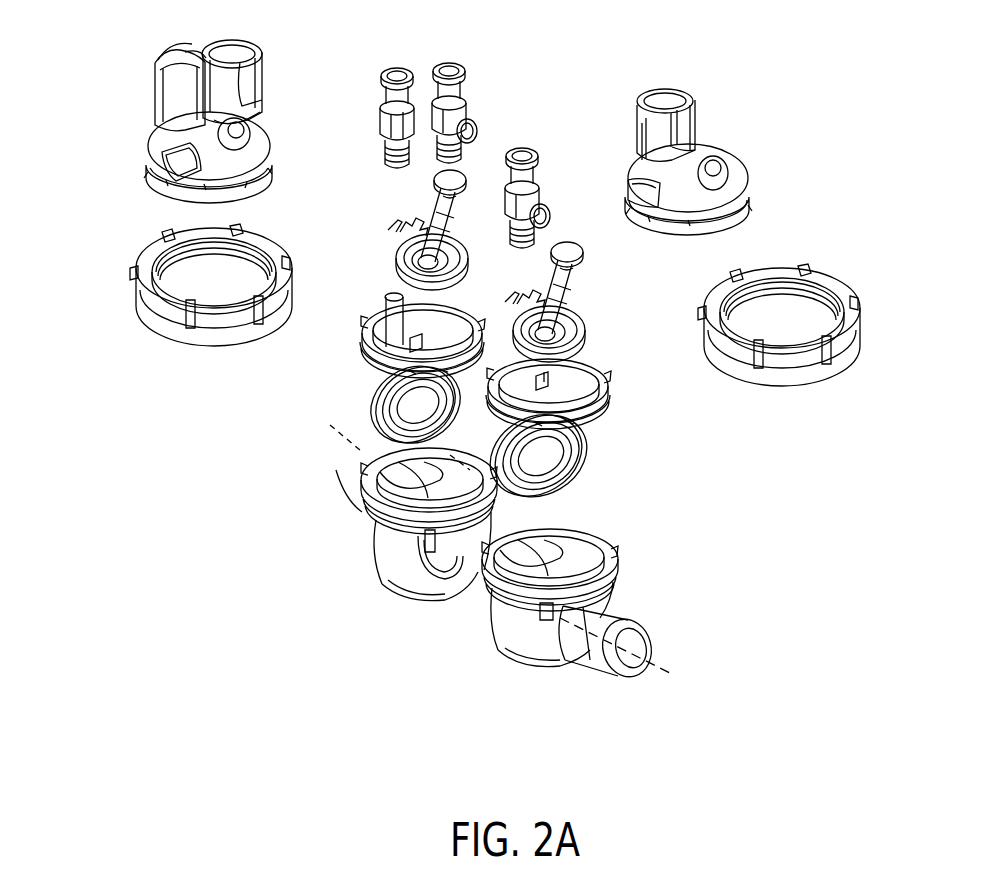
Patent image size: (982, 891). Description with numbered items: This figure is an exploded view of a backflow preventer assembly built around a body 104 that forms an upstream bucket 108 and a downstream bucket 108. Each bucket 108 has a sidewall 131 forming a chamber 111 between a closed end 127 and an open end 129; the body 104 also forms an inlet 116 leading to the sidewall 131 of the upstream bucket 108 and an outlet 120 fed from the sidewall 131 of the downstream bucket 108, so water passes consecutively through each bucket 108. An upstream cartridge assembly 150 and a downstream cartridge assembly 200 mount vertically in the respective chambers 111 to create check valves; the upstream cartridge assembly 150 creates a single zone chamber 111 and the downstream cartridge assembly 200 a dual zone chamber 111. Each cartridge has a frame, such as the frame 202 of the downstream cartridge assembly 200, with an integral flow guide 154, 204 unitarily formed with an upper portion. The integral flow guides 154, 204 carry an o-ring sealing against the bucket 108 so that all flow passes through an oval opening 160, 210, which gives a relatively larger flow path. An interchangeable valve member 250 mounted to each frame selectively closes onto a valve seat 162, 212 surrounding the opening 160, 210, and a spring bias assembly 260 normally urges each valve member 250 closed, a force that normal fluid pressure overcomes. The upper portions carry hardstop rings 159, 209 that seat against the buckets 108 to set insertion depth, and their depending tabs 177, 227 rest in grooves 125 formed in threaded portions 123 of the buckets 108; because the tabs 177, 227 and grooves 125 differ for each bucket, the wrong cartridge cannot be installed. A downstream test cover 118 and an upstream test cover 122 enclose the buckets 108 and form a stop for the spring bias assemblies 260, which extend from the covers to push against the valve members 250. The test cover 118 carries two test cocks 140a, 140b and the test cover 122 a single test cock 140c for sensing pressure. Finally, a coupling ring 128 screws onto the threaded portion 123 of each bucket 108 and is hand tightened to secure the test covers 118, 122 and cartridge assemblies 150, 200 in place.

The body 104 is at (590, 658).
The bucket 108 is at (396, 578).
The chamber 111 is at (392, 500).
The inlet 116 is at (335, 488).
The downstream test cover 118 is at (145, 166).
The outlet 120 is at (652, 640).
The upstream test cover 122 is at (744, 171).
The threaded portion 123 is at (377, 517).
The groove 125 is at (390, 548).
The closed end 127 is at (440, 603).
The coupling ring 128 is at (137, 295).
The open end 129 is at (438, 488).
The sidewall 131 is at (392, 562).
The test cock 140a is at (388, 70).
The test cock 140b is at (452, 70).
The test cock 140c is at (537, 184).
The upstream cartridge assembly 150 is at (365, 195).
The integral flow guide 154 is at (400, 436).
The hardstop ring 159 is at (363, 348).
The opening 160 is at (422, 399).
The valve seat 162 is at (398, 418).
The depending tab 177 is at (385, 381).
The downstream cartridge assembly 200 is at (630, 483).
The frame 202 is at (608, 477).
The integral flow guide 204 is at (598, 490).
The hardstop ring 209 is at (605, 395).
The opening 210 is at (548, 446).
The valve seat 212 is at (590, 435).
The depending tab 227 is at (325, 486).
The valve member 250 is at (397, 254).
The spring bias assembly 260 is at (456, 176).